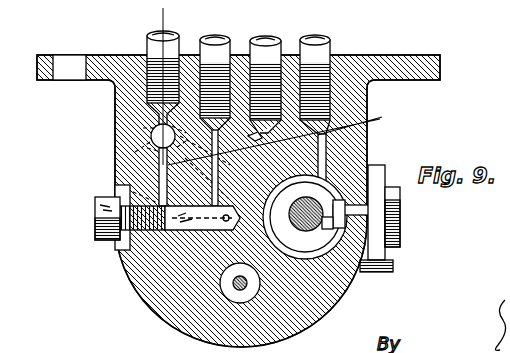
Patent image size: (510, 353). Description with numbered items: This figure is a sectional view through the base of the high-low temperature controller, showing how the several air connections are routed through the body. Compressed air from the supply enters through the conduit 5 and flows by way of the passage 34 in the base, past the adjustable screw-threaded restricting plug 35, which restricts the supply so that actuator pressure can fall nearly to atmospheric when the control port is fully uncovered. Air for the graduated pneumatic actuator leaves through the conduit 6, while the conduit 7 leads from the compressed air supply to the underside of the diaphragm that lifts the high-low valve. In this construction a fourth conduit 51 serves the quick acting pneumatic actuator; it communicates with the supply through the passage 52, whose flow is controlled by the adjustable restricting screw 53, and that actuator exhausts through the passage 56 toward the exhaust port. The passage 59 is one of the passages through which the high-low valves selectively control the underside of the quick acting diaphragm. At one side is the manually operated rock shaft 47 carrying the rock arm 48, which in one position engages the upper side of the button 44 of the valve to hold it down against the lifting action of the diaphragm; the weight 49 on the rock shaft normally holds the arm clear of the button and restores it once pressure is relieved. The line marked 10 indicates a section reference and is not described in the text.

The conduit 5 is at (147, 44).
The conduit 6 is at (214, 48).
The conduit 7 is at (323, 48).
The center line / axis 10 is at (161, 8).
The passage 34 is at (125, 147).
The adjustable screw-threaded restricting plug 35 is at (104, 226).
The button 44 is at (307, 243).
The rock shaft 47 is at (363, 213).
The rock arm 48 is at (330, 228).
The weight 49 is at (384, 167).
The conduit 51 is at (275, 45).
The passage 52 is at (284, 135).
The adjustable restricting screw 53 is at (128, 128).
The passage 56 is at (116, 178).
The passage 59 is at (195, 220).